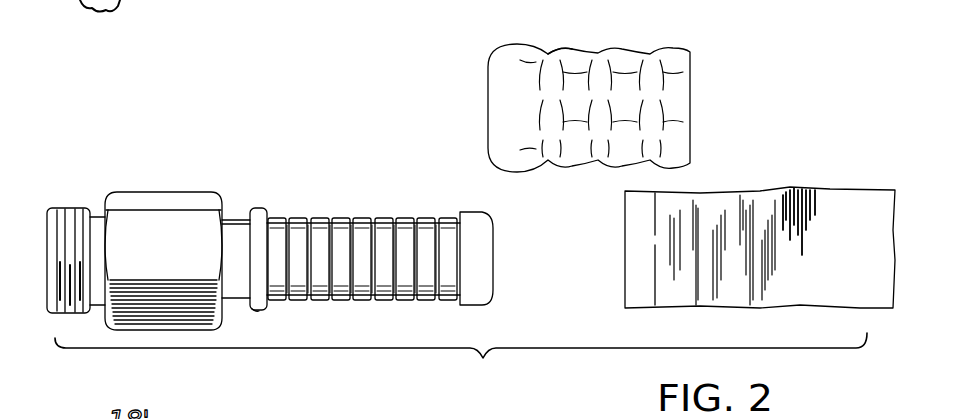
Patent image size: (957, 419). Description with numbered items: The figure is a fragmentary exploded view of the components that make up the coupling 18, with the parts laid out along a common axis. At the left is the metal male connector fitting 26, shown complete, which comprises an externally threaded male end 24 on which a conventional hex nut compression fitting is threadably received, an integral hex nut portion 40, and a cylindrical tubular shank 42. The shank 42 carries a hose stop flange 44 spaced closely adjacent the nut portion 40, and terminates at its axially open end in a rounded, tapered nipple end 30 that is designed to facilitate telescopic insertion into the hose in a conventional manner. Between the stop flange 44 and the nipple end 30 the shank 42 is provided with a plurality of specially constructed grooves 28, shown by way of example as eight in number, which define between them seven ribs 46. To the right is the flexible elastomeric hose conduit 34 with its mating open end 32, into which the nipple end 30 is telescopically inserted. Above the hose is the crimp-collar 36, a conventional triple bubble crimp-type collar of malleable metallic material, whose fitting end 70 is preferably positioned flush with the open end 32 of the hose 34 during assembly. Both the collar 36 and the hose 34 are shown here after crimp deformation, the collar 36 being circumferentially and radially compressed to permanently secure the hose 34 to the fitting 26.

The coupling 18 is at (170, 78).
The male threaded end 24 is at (68, 208).
The hex nut portion 40 is at (160, 193).
The male connector fitting 26 is at (217, 173).
The tubular shank 42 is at (236, 208).
The grooves 28 is at (372, 218).
The ribs 46 is at (433, 218).
The nipple end 30 is at (470, 217).
The hose stop flange 44 is at (258, 310).
The fitting end 70 is at (488, 80).
The crimp-collar 36 is at (627, 44).
The open end 32 is at (625, 265).
The hose conduit 34 is at (810, 190).